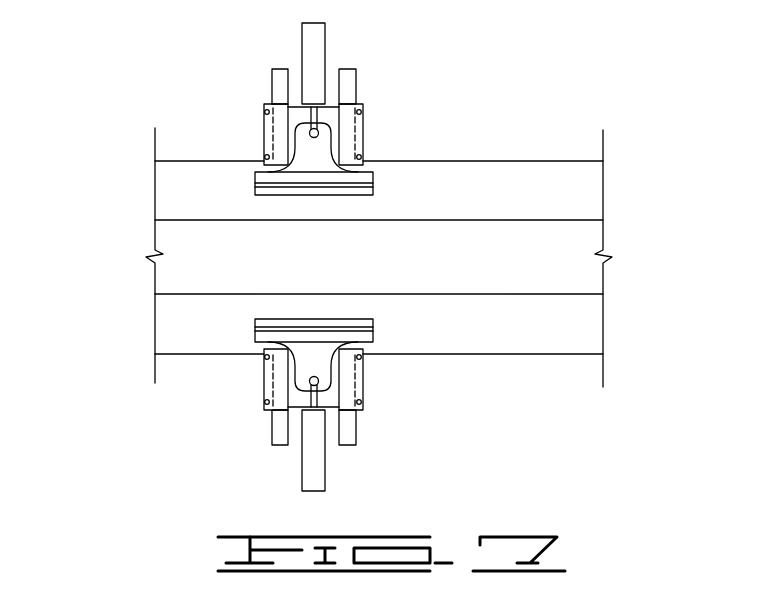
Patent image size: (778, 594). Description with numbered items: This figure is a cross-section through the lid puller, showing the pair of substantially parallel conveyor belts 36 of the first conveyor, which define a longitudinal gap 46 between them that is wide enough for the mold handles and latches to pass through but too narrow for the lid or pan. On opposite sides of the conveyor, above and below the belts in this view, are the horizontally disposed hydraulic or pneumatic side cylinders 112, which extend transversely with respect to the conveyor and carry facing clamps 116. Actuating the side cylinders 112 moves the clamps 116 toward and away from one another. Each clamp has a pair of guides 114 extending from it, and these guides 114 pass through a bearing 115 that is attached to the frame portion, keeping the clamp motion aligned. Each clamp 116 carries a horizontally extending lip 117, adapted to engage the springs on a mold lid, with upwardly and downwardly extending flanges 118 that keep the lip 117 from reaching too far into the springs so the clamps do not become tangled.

The conveyor belts 36 is at (461, 176).
The longitudinal gap 46 is at (521, 254).
The side cylinder 112 is at (302, 44).
The guides 114 is at (272, 80).
The bearing 115 is at (364, 137).
The clamps 116 is at (261, 165).
The lip 117 is at (312, 197).
The flanges 118 is at (277, 196).